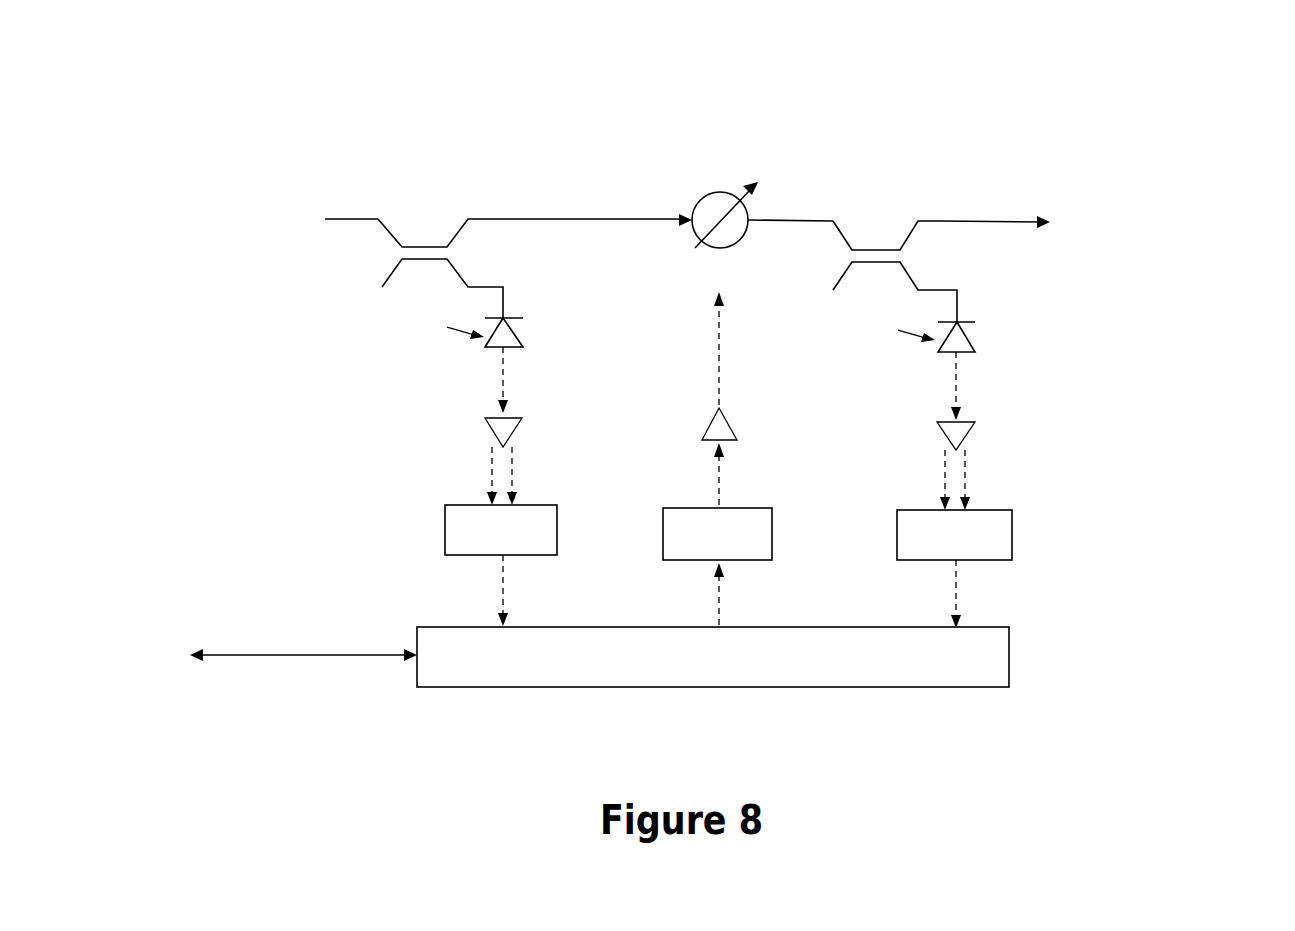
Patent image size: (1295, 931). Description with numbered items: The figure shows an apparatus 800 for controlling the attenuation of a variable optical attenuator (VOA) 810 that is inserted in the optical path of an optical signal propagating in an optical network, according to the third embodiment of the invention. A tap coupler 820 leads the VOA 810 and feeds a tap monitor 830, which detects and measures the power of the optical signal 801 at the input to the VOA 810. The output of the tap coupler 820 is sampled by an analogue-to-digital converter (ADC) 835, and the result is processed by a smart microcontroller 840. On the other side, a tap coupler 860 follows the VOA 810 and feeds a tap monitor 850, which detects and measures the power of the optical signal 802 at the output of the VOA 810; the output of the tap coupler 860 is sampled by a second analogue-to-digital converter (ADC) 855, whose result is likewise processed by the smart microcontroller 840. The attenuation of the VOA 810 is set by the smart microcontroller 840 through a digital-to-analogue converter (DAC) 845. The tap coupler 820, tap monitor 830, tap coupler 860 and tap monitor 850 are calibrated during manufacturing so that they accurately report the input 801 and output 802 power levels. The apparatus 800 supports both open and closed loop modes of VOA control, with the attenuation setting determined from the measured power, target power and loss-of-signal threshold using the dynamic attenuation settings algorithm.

The apparatus 800 is at (268, 110).
The optical signal 801 is at (333, 309).
The optical signal 802 is at (1251, 262).
The variable optical attenuator 810 is at (710, 190).
The tap coupler 820 is at (440, 130).
The tap monitor 830 is at (505, 318).
The analogue-to-digital converter 835 is at (445, 538).
The smart microcontroller 840 is at (1002, 628).
The digital-to-analogue converter 845 is at (757, 508).
The tap monitor 850 is at (962, 322).
The analogue-to-digital converter 855 is at (1012, 547).
The tap coupler 860 is at (883, 150).